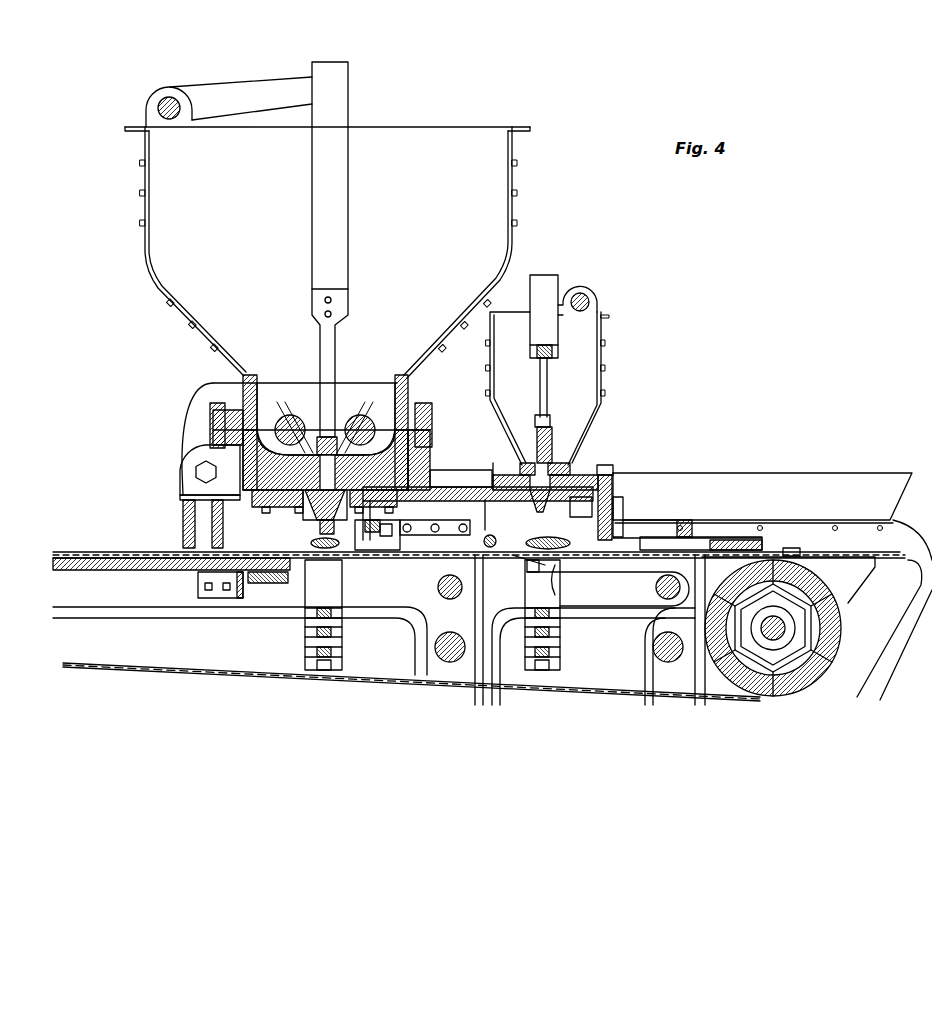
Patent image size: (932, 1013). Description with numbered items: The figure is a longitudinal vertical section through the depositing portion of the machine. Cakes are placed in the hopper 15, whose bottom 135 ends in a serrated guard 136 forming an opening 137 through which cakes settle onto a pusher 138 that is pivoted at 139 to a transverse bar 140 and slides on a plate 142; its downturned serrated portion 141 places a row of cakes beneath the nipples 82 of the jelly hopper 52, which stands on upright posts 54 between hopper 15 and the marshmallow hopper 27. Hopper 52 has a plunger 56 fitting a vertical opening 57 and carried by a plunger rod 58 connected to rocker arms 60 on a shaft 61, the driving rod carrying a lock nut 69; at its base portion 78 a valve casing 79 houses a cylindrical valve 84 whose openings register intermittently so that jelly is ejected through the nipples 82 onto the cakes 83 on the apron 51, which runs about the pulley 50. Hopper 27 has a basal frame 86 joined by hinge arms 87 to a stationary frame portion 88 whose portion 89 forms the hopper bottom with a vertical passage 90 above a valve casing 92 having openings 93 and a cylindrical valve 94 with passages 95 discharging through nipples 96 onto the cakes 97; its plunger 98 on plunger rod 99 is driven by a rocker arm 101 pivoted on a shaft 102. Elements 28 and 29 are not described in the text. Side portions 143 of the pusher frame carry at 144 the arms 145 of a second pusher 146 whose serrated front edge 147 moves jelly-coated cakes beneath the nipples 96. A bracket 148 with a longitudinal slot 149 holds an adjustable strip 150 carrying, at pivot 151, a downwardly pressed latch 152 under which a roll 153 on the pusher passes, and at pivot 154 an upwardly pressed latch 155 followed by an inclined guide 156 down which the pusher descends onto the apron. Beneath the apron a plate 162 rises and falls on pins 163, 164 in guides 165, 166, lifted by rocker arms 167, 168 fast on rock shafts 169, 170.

The hopper 15 is at (905, 515).
The hopper 27 is at (496, 198).
The housing left wall 28 is at (286, 420).
The housing right wall 29 is at (372, 420).
The pulley 50 is at (832, 609).
The apron 51 is at (842, 625).
The hopper 52 is at (603, 366).
The upright posts 54 is at (618, 485).
The plunger 56 is at (554, 440).
The vertical opening 57 is at (555, 480).
The plunger rod 58 is at (540, 380).
The rocker arms 60 is at (566, 290).
The shaft 61 is at (592, 298).
The lock nut 69 is at (541, 275).
The base portion 78 is at (522, 460).
The valve casing 79 is at (560, 493).
The nipples 82 is at (549, 523).
The cakes 83 is at (538, 578).
The cylindrical valve 84 is at (605, 464).
The basal frame 86 is at (410, 398).
The hinge arms 87 is at (210, 400).
The stationary portion of the frame 88 is at (182, 492).
The portion constituting the bottom of the hopper 89 is at (392, 469).
The vertical passage 90 is at (350, 425).
The valve casing 92 is at (337, 519).
The openings 93 is at (320, 500).
The cylindrical valve 94 is at (311, 542).
The passages 95 is at (312, 512).
The nipples 96 is at (320, 530).
The cakes 97 is at (302, 565).
The plunger 98 is at (298, 425).
The plunger rod 99 is at (320, 338).
The rocker arm 101 is at (244, 86).
The shaft 102 is at (169, 97).
The bottom 135 is at (795, 523).
The serrated guard 136 is at (687, 520).
The opening 137 is at (655, 520).
The pusher 138 is at (625, 535).
The pivotal connection 139 is at (715, 540).
The transverse bar 140 is at (762, 538).
The downturned serrated portion 141 is at (575, 562).
The plate 142 is at (785, 552).
The side portions 143 is at (492, 618).
The pivotal connection 144 is at (468, 585).
The arms 145 is at (448, 600).
The second pusher 146 is at (400, 520).
The serrated front edge 147 is at (348, 562).
The upstanding bracket 148 is at (404, 520).
The longitudinal slot 149 is at (492, 505).
The strip 150 is at (440, 520).
The pivot 151 is at (435, 518).
The latch 152 is at (430, 555).
The pin or roll 153 is at (388, 560).
The pivot 154 is at (462, 520).
The latch 155 is at (476, 500).
The guide 156 is at (527, 562).
The plate 162 is at (336, 562).
The pin 163 is at (310, 563).
The pin 164 is at (545, 575).
The guide 165 is at (316, 647).
The guide 166 is at (555, 662).
The rocker arm 167 is at (370, 590).
The rocker arm 168 is at (623, 592).
The rock shaft 169 is at (483, 542).
The rock shaft 170 is at (668, 600).